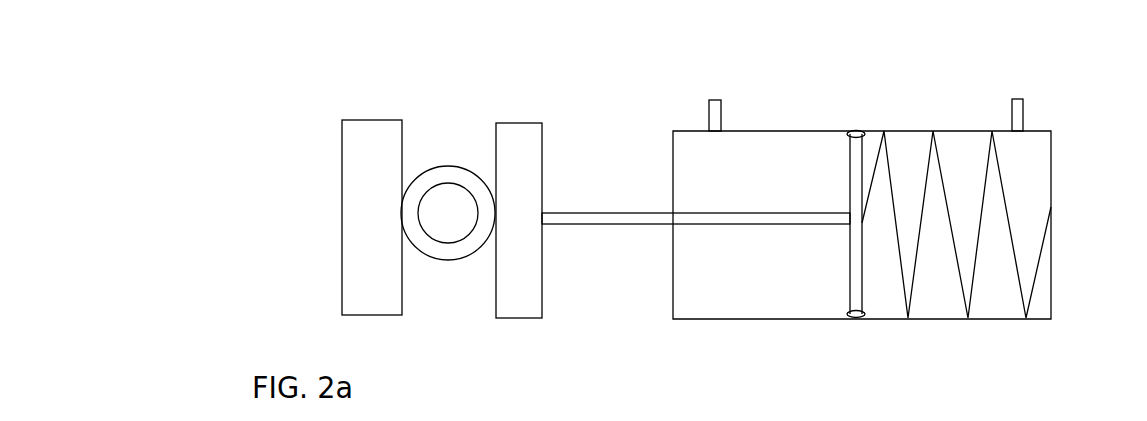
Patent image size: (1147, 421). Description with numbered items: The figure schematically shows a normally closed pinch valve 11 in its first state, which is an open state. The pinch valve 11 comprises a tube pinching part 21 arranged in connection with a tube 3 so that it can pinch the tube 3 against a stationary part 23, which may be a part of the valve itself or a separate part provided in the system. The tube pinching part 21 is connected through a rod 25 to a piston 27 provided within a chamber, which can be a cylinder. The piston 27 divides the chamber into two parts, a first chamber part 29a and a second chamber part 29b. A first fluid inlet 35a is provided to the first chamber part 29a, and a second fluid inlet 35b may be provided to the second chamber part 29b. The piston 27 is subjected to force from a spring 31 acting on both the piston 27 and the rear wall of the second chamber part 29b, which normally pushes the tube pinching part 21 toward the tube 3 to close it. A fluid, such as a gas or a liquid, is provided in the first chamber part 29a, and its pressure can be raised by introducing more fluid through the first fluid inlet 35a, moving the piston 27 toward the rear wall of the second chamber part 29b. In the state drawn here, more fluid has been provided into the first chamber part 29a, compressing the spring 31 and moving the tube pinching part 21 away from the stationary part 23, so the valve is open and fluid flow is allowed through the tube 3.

The tube 3 is at (447, 167).
The pinch valve 11 is at (883, 77).
The tube pinching part 21 is at (520, 122).
The stationary part 23 is at (361, 125).
The rod 25 is at (637, 211).
The piston 27 is at (850, 175).
The first chamber part 29a is at (773, 303).
The second chamber part 29b is at (893, 310).
The spring 31 is at (973, 293).
The first fluid inlet 35a is at (708, 113).
The second fluid inlet 35b is at (1022, 110).